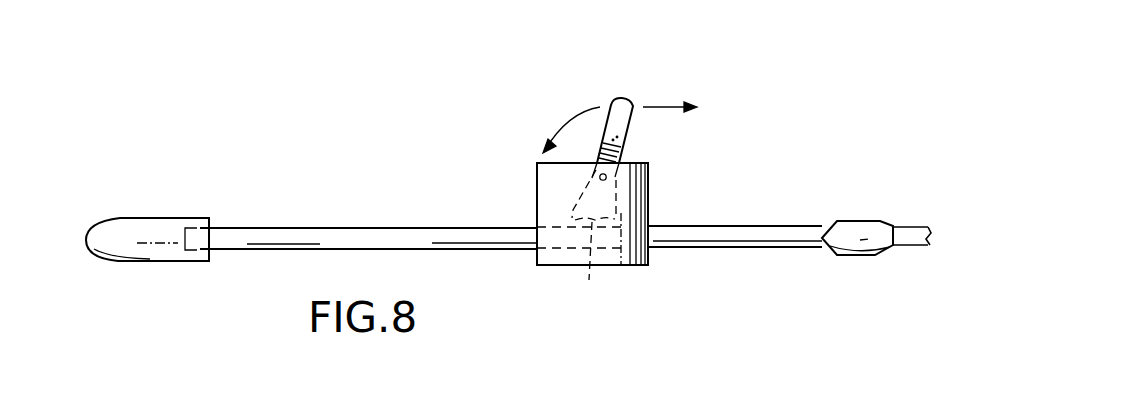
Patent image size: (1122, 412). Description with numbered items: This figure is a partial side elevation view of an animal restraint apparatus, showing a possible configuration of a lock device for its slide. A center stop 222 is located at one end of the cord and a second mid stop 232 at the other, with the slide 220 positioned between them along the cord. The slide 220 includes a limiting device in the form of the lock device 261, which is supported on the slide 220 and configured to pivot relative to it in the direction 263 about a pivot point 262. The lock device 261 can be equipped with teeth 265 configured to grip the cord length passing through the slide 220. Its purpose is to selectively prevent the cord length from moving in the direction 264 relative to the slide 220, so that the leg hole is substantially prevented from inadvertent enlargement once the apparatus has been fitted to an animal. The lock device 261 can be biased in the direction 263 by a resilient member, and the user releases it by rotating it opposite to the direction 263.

The slide 220 is at (630, 266).
The center stop 222 is at (152, 216).
The second mid stop 232 is at (860, 218).
The lock device 261 is at (627, 97).
The pivot point 262 is at (607, 179).
The direction 263 is at (566, 118).
The direction 264 is at (660, 108).
The teeth 265 is at (592, 265).